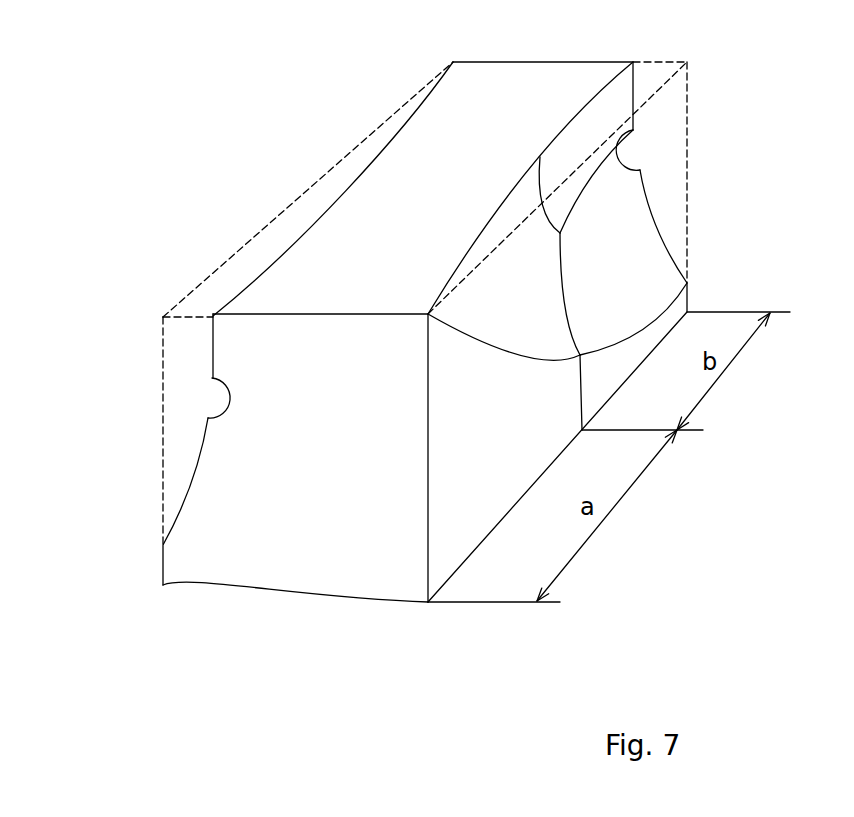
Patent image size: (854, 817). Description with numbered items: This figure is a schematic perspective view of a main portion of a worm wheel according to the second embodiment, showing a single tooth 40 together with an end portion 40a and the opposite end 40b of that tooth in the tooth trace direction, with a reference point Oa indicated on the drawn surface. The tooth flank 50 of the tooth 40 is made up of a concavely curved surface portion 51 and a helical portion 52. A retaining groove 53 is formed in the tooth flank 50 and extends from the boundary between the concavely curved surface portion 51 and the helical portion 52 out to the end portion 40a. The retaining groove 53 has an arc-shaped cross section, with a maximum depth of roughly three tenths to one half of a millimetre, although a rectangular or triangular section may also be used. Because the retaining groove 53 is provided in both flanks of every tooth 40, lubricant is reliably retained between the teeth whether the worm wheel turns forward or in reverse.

The tooth 40 is at (275, 490).
The end portion 40a is at (615, 85).
The second side surface of body 40b is at (200, 446).
The tooth flank 50 is at (643, 254).
The concavely curved surface portion 51 is at (500, 267).
The helical portion 52 is at (582, 137).
The retaining groove 53 is at (218, 400).
The reference point of curved surface Oa is at (580, 358).